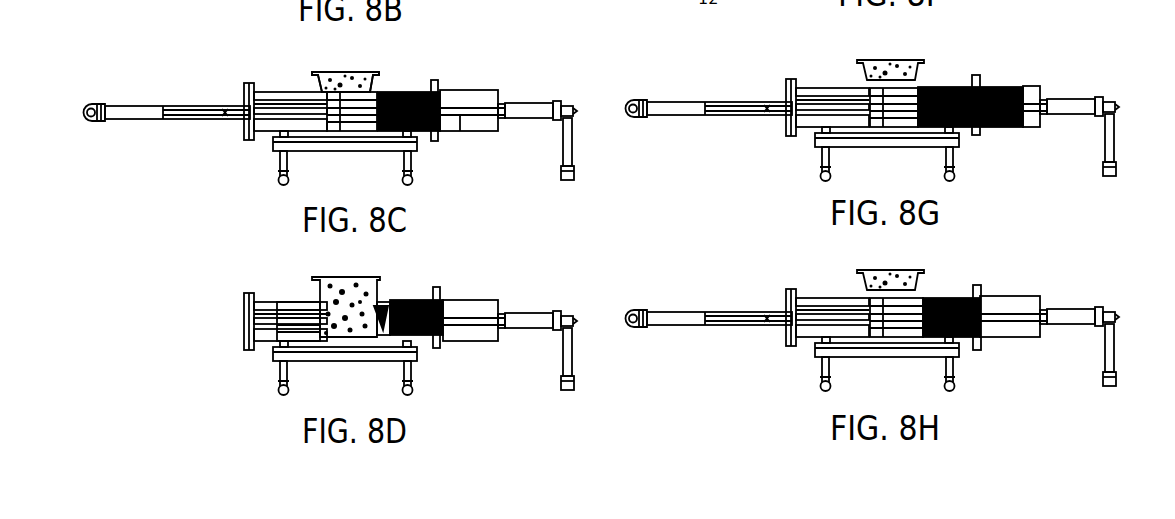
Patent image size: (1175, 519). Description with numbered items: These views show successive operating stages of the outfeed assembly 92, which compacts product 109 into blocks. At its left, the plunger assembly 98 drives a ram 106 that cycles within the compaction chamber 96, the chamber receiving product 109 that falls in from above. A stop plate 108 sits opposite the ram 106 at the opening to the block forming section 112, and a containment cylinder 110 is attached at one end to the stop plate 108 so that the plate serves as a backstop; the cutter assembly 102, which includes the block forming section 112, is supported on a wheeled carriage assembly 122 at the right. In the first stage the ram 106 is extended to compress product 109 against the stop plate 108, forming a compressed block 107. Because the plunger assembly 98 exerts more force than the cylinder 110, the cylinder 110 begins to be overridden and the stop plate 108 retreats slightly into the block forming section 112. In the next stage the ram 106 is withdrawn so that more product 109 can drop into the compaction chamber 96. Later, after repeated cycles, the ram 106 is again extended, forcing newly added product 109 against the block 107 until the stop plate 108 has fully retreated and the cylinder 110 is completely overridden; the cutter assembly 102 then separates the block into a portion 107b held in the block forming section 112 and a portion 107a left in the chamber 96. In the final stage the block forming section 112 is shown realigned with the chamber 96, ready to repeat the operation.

In FIG. 8C, the outfeed assembly 92 is at (167, 180).
In FIG. 8D, the outfeed assembly 92 is at (157, 422).
In FIG. 8G, the outfeed assembly 92 is at (716, 209).
In FIG. 8H, the outfeed assembly 92 is at (717, 411).
In FIG. 8C, the compaction chamber 96 is at (437, 65).
In FIG. 8D, the compaction chamber 96 is at (408, 303).
In FIG. 8G, the compaction chamber 96 is at (970, 63).
In FIG. 8H, the compaction chamber 96 is at (951, 288).
In FIG. 8C, the plunger assembly 98 is at (206, 94).
In FIG. 8G, the cutter assembly 102 is at (983, 192).
In FIG. 8C, the ram 106 is at (362, 110).
In FIG. 8D, the ram 106 is at (296, 297).
In FIG. 8G, the ram 106 is at (915, 82).
In FIG. 8H, the ram 106 is at (913, 295).
In FIG. 8C, the compressed block 107 is at (407, 90).
In FIG. 8G, the block portion within chamber 107a is at (994, 72).
In FIG. 8H, the block portion within chamber 107a is at (1010, 299).
In FIG. 8G, the block portion within block forming section 107b is at (1020, 169).
In FIG. 8C, the stop plate 108 is at (447, 120).
In FIG. 8G, the stop plate 108 is at (1049, 141).
In FIG. 8H, the stop plate 108 is at (1013, 348).
In FIG. 8C, the product 109 is at (345, 72).
In FIG. 8D, the product 109 is at (375, 291).
In FIG. 8C, the containment cylinder 110 is at (523, 110).
In FIG. 8G, the containment cylinder 110 is at (1079, 79).
In FIG. 8C, the block forming section 112 is at (445, 90).
In FIG. 8G, the block forming section 112 is at (1028, 80).
In FIG. 8H, the block forming section 112 is at (1036, 291).
In FIG. 8C, the wheeled carriage assembly 122 is at (572, 150).
In FIG. 8D, the wheeled carriage assembly 122 is at (602, 361).
In FIG. 8G, the wheeled carriage assembly 122 is at (1137, 145).
In FIG. 8H, the wheeled carriage assembly 122 is at (1137, 355).